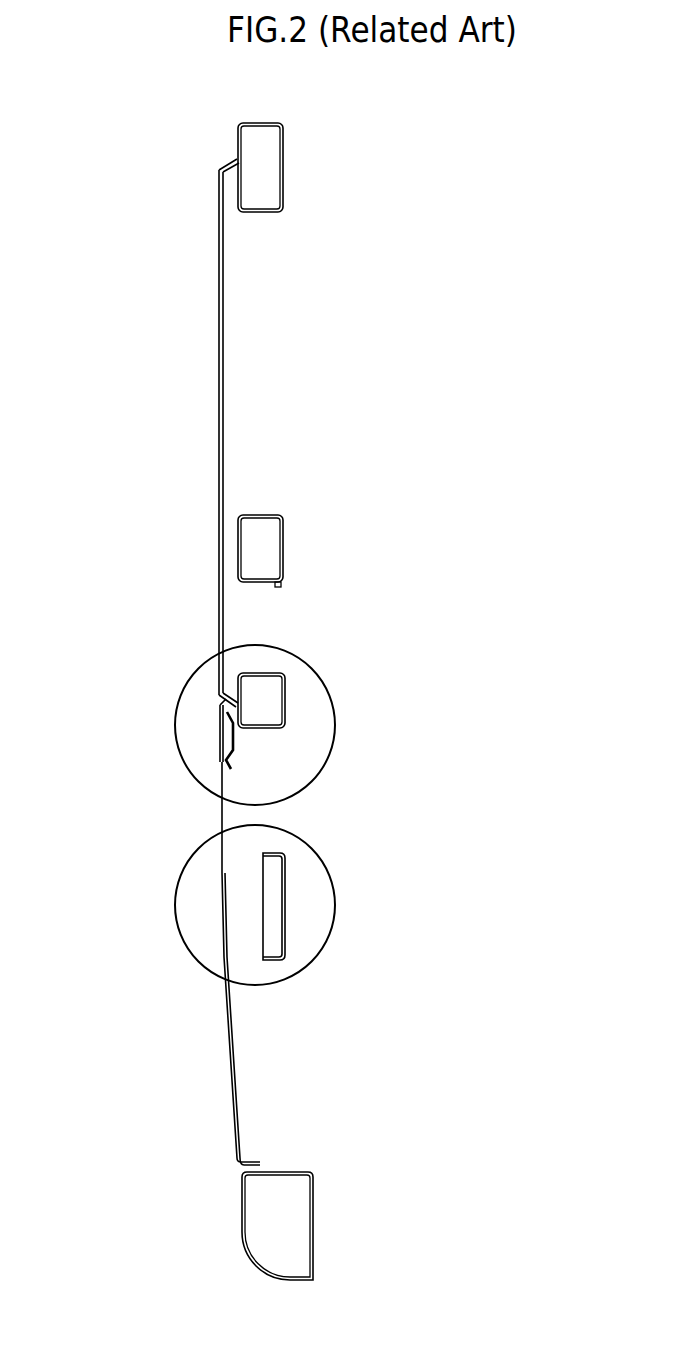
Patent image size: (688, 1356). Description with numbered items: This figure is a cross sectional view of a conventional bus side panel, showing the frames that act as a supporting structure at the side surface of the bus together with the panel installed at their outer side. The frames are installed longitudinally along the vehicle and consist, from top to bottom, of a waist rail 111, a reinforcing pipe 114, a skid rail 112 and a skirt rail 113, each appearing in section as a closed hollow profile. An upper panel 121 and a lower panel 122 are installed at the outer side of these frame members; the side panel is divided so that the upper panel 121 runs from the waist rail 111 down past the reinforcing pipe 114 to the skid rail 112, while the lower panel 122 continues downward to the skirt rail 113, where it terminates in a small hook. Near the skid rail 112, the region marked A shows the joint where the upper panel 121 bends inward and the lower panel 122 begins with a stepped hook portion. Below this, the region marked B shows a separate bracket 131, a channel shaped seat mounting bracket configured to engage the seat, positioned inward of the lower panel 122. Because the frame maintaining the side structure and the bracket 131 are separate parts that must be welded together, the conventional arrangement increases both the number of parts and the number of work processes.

The waist rail 111 is at (282, 170).
The skid rail 112 is at (282, 700).
The skirt rail 113 is at (313, 1218).
The reinforcing pipe 114 is at (282, 545).
The upper panel 121 is at (220, 370).
The lower panel 122 is at (224, 905).
The bracket 131 is at (285, 910).
The enlarged portion A is at (183, 690).
The enlarged portion B is at (178, 880).